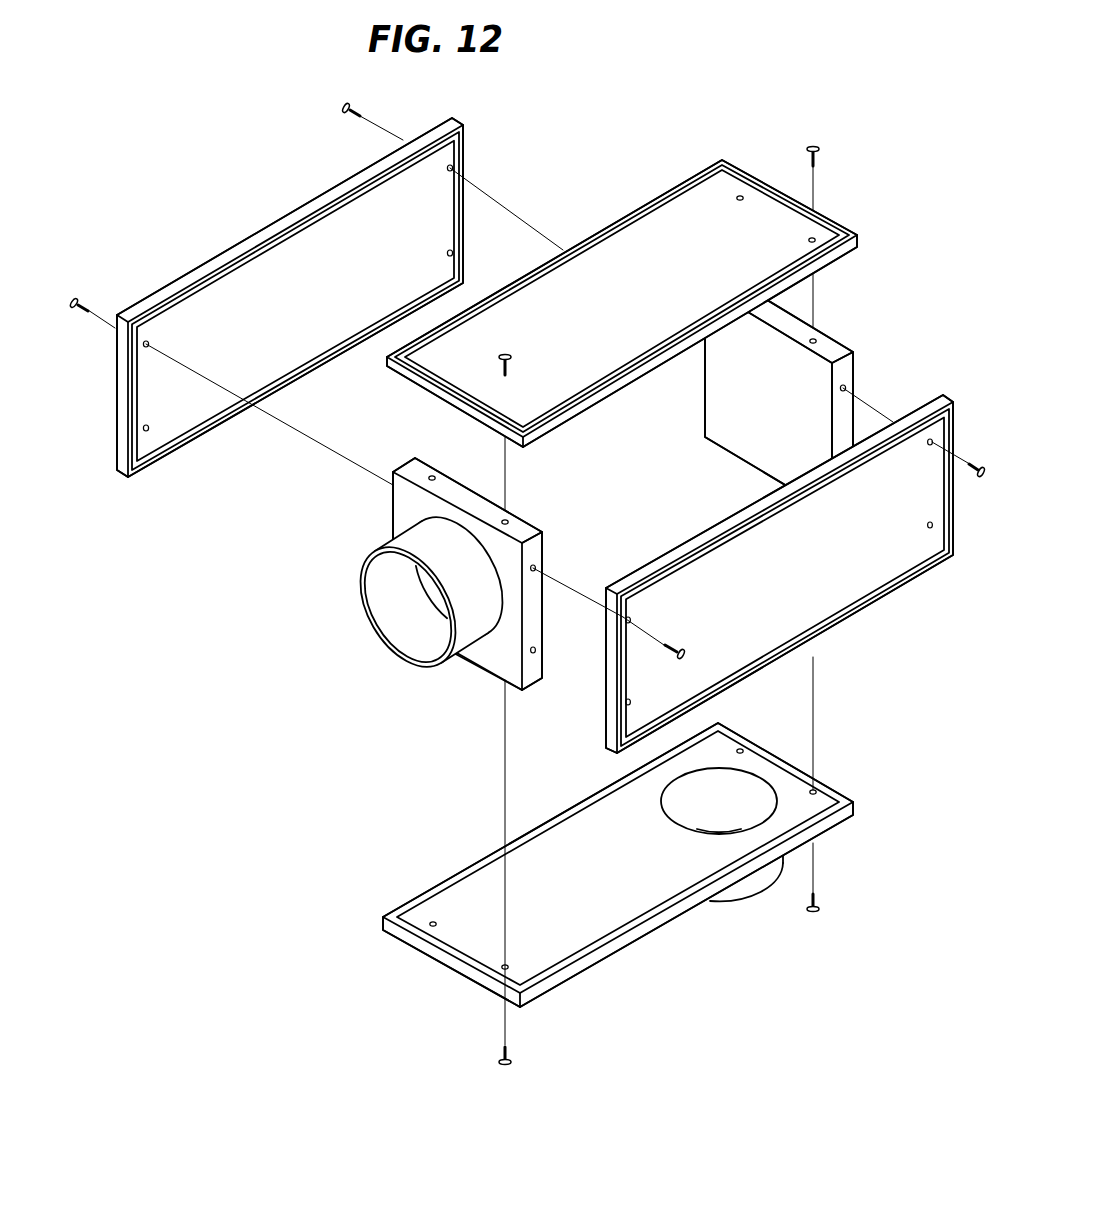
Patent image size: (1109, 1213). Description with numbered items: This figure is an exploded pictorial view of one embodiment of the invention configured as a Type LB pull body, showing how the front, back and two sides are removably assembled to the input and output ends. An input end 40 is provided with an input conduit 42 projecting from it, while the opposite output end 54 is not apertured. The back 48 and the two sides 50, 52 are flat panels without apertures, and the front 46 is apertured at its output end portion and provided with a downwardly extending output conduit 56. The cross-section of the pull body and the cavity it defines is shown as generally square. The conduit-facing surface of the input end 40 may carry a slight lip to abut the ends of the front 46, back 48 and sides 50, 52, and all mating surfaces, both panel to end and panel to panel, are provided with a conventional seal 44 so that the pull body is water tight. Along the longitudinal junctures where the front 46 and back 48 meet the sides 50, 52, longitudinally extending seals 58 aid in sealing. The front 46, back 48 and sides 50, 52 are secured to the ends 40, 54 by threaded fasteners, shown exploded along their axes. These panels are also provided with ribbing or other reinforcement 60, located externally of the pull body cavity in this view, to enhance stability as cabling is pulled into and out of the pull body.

The input end 40 is at (450, 698).
The input conduit 42 is at (361, 610).
The seal 44 is at (200, 434).
The front 46 is at (623, 988).
The back 48 is at (622, 270).
The side 50 is at (284, 493).
The side 52 is at (903, 641).
The output end 54 is at (874, 312).
The output conduit 56 is at (761, 898).
The longitudinally extending seal 58 is at (336, 203).
The ribbing or other reinforcement 60 is at (624, 215).